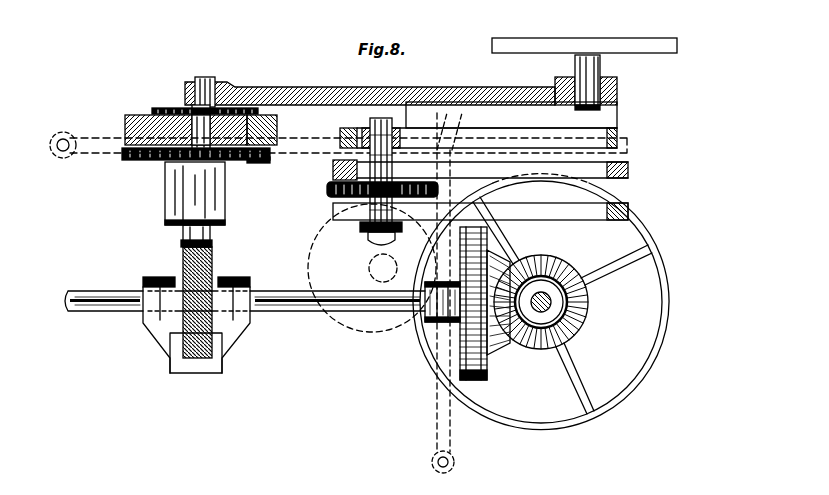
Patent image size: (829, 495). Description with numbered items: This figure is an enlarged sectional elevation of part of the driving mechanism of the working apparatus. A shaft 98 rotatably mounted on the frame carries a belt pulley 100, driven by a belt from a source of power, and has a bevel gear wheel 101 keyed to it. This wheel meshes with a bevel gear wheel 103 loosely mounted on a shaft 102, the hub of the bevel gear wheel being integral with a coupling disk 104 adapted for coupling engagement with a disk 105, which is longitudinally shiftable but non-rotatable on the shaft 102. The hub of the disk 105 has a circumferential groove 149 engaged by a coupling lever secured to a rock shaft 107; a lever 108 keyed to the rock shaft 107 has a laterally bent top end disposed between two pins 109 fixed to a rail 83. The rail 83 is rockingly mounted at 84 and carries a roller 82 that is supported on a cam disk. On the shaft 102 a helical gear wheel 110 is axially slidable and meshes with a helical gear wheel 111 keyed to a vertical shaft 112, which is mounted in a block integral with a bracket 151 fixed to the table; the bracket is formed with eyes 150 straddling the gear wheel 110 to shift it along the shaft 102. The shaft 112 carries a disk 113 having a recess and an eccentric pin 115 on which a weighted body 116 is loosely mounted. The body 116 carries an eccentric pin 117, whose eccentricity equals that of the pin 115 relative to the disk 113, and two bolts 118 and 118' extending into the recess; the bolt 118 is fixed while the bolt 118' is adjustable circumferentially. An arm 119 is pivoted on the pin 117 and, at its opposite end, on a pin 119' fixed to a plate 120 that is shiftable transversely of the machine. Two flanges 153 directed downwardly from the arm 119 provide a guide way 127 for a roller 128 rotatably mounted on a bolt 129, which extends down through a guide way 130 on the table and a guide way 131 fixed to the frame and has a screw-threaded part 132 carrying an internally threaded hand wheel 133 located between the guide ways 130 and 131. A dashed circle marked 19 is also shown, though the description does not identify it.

The plate 120 is at (600, 40).
The pin 119' is at (608, 82).
The bolt 118 is at (370, 85).
The bolt 118' is at (301, 85).
The arm 119 is at (410, 85).
The eccentric pin 117 is at (212, 80).
The eccentric pin 115 is at (125, 130).
The weighted body 116 is at (277, 128).
The disk 113 is at (140, 161).
The vertical shaft 112 is at (182, 238).
The helical gear wheel 110 is at (206, 358).
The bracket 151 is at (236, 334).
The eyes 150 is at (145, 280).
The helical gear wheel 111 is at (240, 278).
The shaft 102 is at (112, 311).
The circumferential groove 149 is at (445, 320).
The disk 105 is at (462, 356).
The bevel gear wheel 103 is at (486, 372).
The coupling disk 104 is at (480, 385).
The belt pulley 100 is at (661, 250).
The bevel gear wheel 101 is at (538, 350).
The shaft 98 is at (551, 306).
The guide way 127 is at (538, 124).
The flanges 153 is at (617, 120).
The rail 83 is at (630, 146).
The roller 128 is at (360, 129).
The roller 82 is at (394, 180).
The bolt 129 is at (333, 150).
The guide way 130 is at (628, 171).
The hand wheel 133 is at (327, 190).
The guide way 131 is at (628, 210).
The screw-threaded part 132 is at (372, 214).
The pins 109 is at (442, 130).
The lever 108 is at (435, 423).
The rock shaft 107 is at (455, 462).
The shaft 19 is at (368, 268).
The rocking mount 84 is at (63, 151).